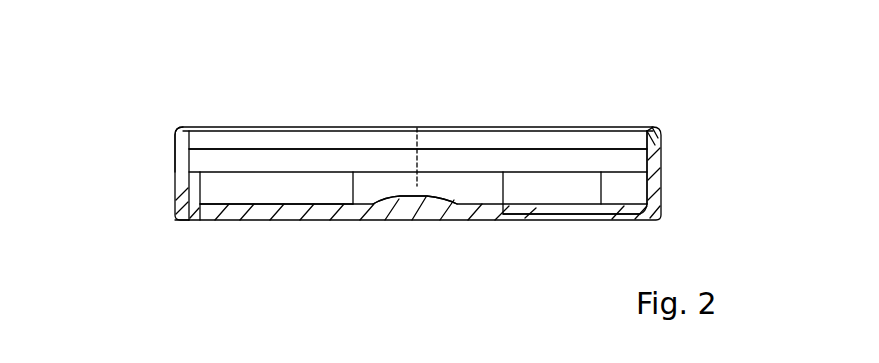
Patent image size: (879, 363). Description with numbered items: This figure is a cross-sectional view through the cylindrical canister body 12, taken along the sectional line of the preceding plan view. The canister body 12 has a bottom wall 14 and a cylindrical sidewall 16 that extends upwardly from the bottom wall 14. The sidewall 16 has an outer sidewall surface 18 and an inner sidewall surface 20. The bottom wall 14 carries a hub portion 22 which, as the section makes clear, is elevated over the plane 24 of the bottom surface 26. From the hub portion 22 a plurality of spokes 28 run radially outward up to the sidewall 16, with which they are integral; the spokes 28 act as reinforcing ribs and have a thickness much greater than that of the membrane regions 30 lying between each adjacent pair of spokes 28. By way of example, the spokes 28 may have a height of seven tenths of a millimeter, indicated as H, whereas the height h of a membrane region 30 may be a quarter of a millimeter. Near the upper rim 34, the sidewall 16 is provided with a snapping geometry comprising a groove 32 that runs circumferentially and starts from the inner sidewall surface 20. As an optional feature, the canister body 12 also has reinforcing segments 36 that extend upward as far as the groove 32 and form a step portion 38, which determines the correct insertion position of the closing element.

The canister body 12 is at (130, 155).
The bottom wall 14 is at (216, 222).
The sidewall 16 is at (660, 178).
The outer sidewall surface 18 is at (180, 183).
The inner sidewall surface 20 is at (205, 186).
The hub portion 22 is at (402, 205).
The plane 24 is at (300, 230).
The bottom surface 26 is at (494, 222).
The spokes 28 is at (327, 218).
The membrane region 30 is at (610, 222).
The groove 32 is at (658, 140).
The upper rim 34 is at (654, 121).
The reinforcing segments 36 is at (176, 208).
The step portion 38 is at (200, 162).